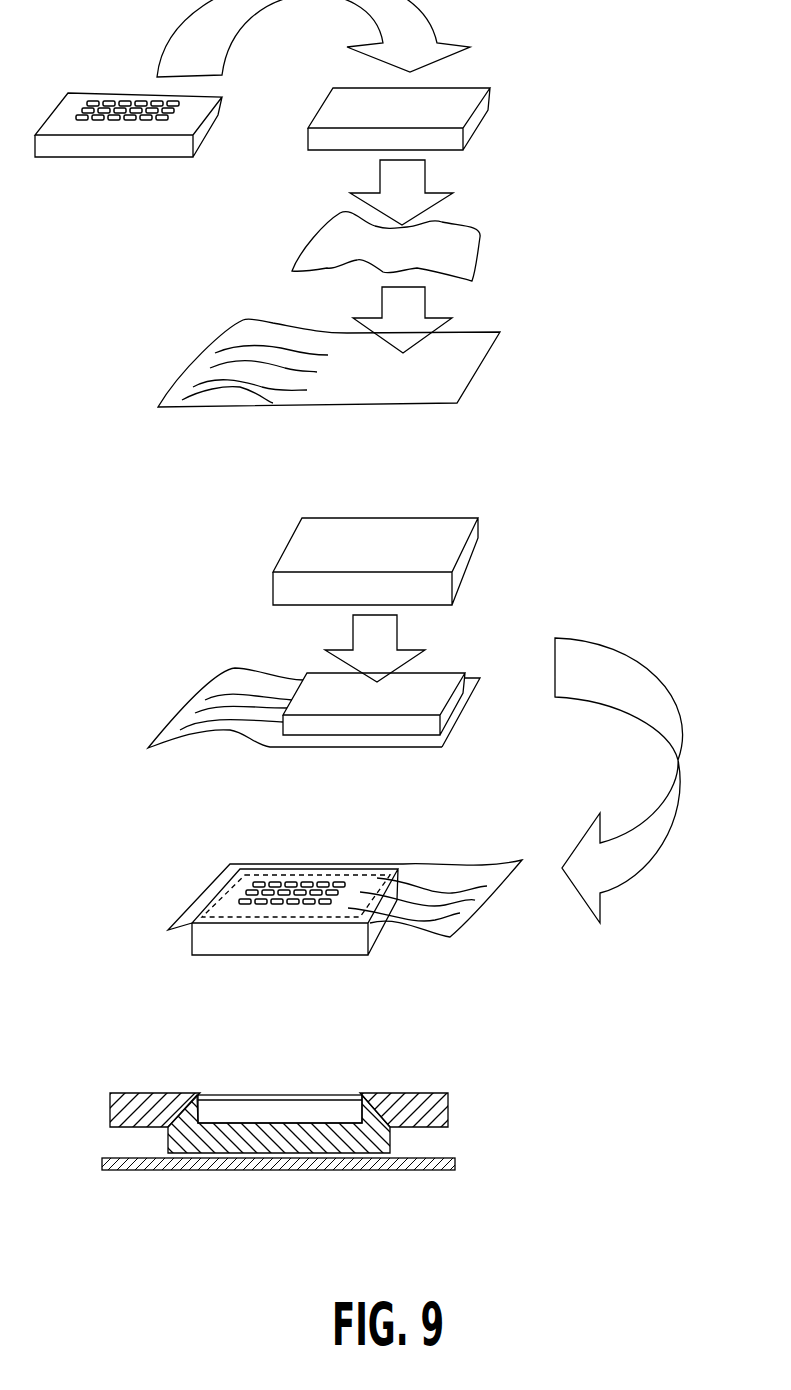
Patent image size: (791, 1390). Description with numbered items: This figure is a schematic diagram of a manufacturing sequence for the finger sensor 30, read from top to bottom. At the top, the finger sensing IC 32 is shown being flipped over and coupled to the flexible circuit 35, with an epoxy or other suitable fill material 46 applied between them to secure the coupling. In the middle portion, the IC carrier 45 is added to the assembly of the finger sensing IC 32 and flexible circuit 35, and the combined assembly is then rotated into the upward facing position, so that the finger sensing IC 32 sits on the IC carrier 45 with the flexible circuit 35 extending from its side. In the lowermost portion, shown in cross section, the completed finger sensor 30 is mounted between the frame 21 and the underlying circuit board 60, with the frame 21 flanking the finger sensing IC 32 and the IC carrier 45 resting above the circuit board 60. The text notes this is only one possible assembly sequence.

The frame 21 is at (162, 1093).
The finger sensor 30 is at (202, 886).
The finger sensing IC 32 is at (118, 158).
The flexible circuit 35 is at (487, 357).
The IC carrier 45 is at (476, 549).
The fill material 46 is at (482, 240).
The circuit board 60 is at (410, 1163).